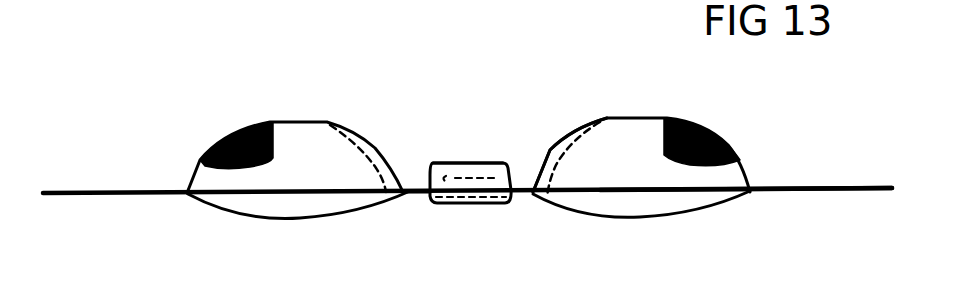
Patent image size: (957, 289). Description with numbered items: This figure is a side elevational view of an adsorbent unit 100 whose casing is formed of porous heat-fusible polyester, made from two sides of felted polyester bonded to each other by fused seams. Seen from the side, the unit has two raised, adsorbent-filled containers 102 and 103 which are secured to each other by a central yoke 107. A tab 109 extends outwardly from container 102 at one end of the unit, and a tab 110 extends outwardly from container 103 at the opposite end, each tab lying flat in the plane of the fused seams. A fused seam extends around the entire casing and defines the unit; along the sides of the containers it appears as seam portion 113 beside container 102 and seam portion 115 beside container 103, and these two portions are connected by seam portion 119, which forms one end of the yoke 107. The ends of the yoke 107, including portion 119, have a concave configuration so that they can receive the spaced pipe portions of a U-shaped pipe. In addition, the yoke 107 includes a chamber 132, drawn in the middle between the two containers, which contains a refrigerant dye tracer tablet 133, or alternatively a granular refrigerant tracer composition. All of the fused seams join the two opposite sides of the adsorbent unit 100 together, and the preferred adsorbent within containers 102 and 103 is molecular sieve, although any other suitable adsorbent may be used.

The adsorbent unit 100 is at (208, 65).
The container 102 is at (717, 123).
The container 103 is at (328, 122).
The yoke 107 is at (523, 188).
The tab 109 is at (803, 183).
The tab 110 is at (115, 190).
The portion of fused seam 113 is at (708, 193).
The portion of fused seam 115 is at (233, 202).
The portion of fused seam 119 is at (413, 193).
The chamber 132 is at (473, 162).
The refrigerant dye tracer tablet 133 is at (452, 157).